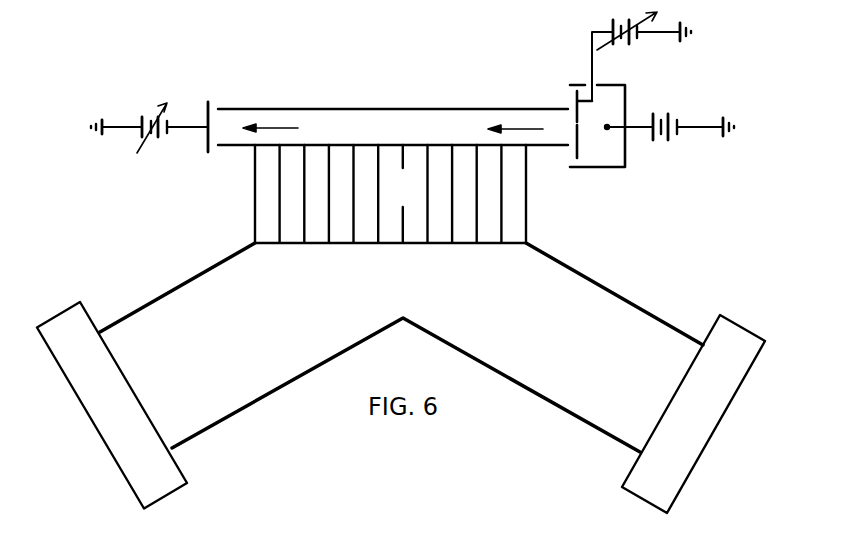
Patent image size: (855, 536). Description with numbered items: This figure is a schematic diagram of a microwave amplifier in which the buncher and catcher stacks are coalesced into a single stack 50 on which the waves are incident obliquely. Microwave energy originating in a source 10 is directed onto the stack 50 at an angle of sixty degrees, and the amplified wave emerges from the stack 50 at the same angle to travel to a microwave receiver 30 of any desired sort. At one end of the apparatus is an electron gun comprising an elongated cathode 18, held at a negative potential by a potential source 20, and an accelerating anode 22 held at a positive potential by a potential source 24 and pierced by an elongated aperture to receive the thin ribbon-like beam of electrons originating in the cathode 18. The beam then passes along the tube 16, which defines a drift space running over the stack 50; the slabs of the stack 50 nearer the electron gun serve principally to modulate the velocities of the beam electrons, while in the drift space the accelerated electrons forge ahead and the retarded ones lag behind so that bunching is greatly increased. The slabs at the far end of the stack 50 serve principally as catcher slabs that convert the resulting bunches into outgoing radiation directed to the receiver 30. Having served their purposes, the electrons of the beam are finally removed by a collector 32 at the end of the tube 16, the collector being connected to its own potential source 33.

The source 10 is at (630, 495).
The tube 16 is at (447, 109).
The cathode 18 is at (607, 130).
The potential source 20 is at (665, 140).
The accelerating anode 22 is at (578, 113).
The potential source 24 is at (623, 17).
The microwave receiver 30 is at (172, 493).
The collector 32 is at (206, 103).
The variable collector voltage source 33 is at (158, 143).
The stack 50 is at (418, 201).